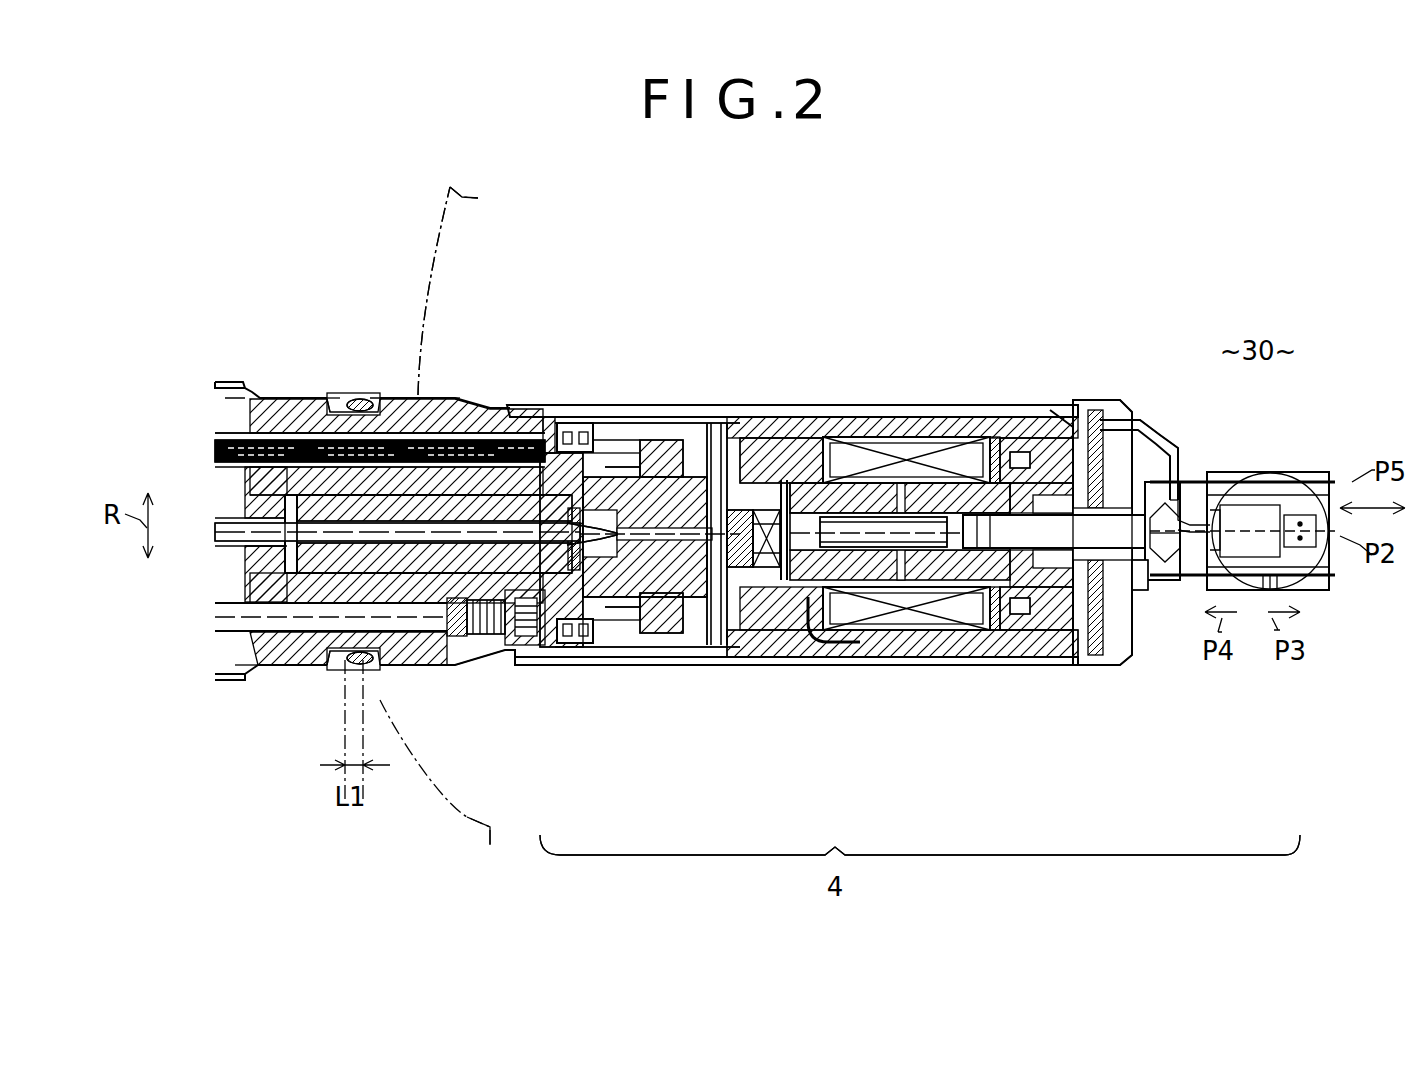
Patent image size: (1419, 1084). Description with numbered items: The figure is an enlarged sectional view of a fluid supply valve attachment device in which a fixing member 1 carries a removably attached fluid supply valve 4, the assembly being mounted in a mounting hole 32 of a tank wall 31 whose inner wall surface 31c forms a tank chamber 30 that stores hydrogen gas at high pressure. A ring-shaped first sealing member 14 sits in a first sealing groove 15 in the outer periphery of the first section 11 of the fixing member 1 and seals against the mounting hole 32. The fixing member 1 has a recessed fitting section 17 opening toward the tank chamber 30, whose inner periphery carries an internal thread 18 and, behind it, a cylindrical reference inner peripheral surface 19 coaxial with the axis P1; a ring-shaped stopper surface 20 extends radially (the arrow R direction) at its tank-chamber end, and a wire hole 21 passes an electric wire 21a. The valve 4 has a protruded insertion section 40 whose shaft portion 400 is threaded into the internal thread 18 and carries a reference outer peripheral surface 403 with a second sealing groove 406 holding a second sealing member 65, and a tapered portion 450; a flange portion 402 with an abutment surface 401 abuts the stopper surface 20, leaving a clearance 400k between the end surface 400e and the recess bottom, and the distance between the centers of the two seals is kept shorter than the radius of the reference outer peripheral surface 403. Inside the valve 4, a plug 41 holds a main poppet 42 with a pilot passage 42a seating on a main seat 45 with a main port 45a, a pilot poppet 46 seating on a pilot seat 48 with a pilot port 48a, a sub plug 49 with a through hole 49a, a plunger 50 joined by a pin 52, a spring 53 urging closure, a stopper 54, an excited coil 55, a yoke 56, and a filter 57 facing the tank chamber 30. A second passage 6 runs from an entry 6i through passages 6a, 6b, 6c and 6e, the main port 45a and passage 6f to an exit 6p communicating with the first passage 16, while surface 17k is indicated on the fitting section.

The fixing member 1 is at (240, 670).
The fluid supply valve 4 is at (920, 868).
The second passage 6 is at (905, 405).
The passage 6a is at (1085, 400).
The passage 6b is at (930, 417).
The passage 6c is at (745, 422).
The passage 6e is at (683, 422).
The passage 6f is at (490, 660).
The entry 6i is at (1140, 424).
The exit 6p is at (288, 668).
The first section 11 is at (265, 668).
The first sealing member 14 is at (375, 398).
The first sealing groove 15 is at (348, 402).
The first passage 16 is at (225, 536).
The recessed fitting section 17 is at (432, 660).
The sleeve end face 17k is at (285, 505).
The internal thread 18 is at (510, 400).
The reference inner peripheral surface 19 is at (395, 397).
The stopper surface 20 is at (588, 422).
The wire hole 21 is at (230, 432).
The electric wire 21a is at (240, 455).
The tank chamber 30 is at (1268, 463).
The tank wall 31 is at (445, 242).
The inner wall surface 31c is at (455, 205).
The mounting hole 32 is at (235, 394).
The protruded insertion section 40 is at (520, 404).
The plug 41 is at (658, 440).
The main poppet 42 is at (700, 477).
The pilot passage 42a is at (697, 657).
The main seat 45 is at (615, 660).
The main port 45a is at (625, 665).
The pilot poppet 46 is at (800, 483).
The pilot seat 48 is at (790, 640).
The pilot port 48a is at (742, 630).
The sub plug 49 is at (848, 437).
The through hole 49a is at (782, 438).
The plunger 50 is at (890, 645).
The pin 52 is at (842, 657).
The spring 53 is at (945, 517).
The stopper 54 is at (1092, 665).
The excited coil 55 is at (988, 438).
The yoke 56 is at (1045, 438).
The filter 57 is at (1140, 612).
The second sealing member 65 is at (362, 398).
The shaft portion 400 is at (450, 397).
The end surface 400e is at (225, 678).
The clearance 400k is at (270, 560).
The abutment surface 401 is at (556, 420).
The flange portion 402 is at (608, 422).
The reference outer peripheral surface 403 is at (308, 396).
The second sealing groove 406 is at (332, 396).
The tapered portion 450 is at (290, 393).
The axis P1 is at (268, 505).